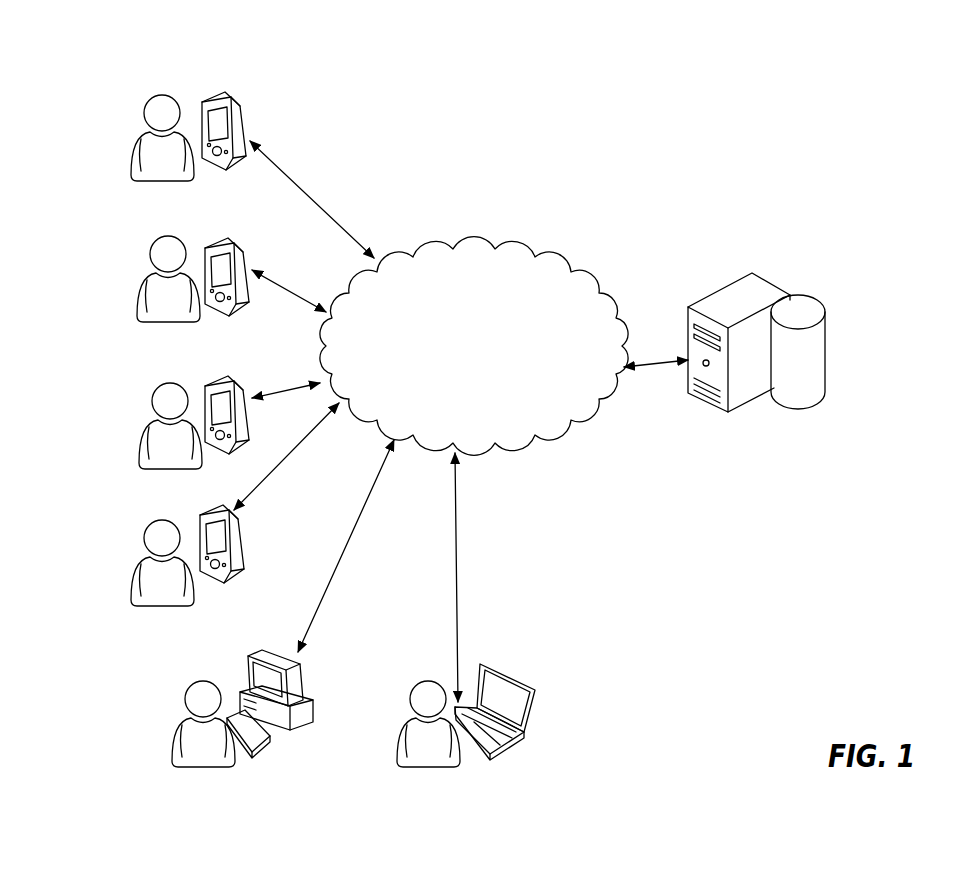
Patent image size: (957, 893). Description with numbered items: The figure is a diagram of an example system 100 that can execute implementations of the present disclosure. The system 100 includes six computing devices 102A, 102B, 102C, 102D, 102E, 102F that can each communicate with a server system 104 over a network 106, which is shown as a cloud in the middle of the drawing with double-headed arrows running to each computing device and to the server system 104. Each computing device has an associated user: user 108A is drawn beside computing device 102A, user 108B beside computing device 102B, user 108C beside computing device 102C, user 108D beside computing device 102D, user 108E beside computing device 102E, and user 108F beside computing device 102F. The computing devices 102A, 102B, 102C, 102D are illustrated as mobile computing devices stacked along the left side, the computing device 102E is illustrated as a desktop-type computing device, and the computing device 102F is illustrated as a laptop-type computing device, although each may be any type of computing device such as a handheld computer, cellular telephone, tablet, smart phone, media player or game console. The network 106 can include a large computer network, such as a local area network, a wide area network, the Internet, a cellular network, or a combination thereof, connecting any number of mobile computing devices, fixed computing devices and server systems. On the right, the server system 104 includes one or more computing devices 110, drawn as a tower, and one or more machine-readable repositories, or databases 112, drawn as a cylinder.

The system 100 is at (632, 82).
The computing device 102A is at (229, 93).
The computing device 102B is at (231, 240).
The computing device 102C is at (231, 378).
The computing device 102D is at (240, 548).
The computing device 102E is at (306, 690).
The computing device 102F is at (538, 692).
The server system 104 is at (771, 365).
The network 106 is at (451, 246).
The user 108A is at (158, 184).
The user 108B is at (163, 323).
The user 108C is at (166, 472).
The user 108D is at (160, 608).
The user 108E is at (201, 770).
The user 108F is at (425, 770).
The computing device 110 is at (774, 284).
The database 112 is at (828, 307).